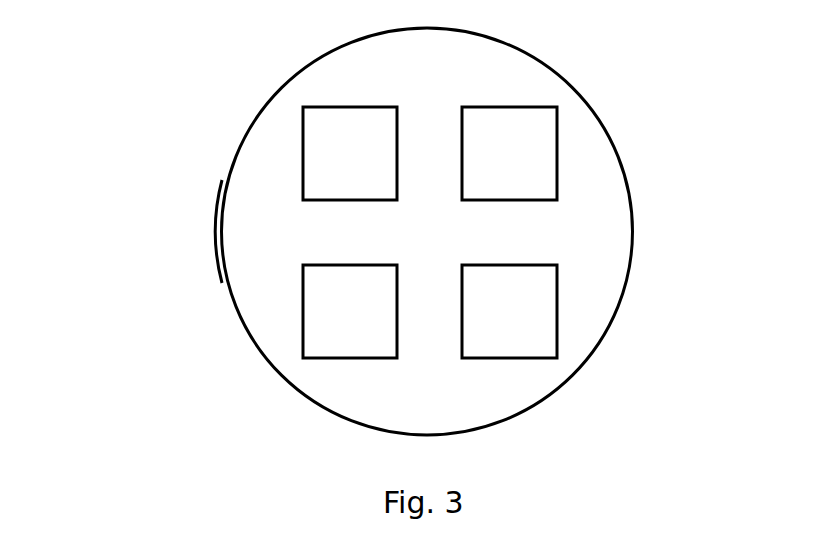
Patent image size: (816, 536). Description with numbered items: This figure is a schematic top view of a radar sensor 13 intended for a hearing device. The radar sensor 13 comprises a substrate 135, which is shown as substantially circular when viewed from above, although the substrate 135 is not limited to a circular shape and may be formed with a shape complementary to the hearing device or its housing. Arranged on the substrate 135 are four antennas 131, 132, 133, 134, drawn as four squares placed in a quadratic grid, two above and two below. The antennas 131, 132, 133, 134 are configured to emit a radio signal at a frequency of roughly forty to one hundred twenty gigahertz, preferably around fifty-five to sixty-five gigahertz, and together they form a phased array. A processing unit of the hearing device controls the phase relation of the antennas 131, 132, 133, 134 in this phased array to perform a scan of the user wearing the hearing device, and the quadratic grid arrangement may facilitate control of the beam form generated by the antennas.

The radar sensor 13 is at (137, 270).
The antenna 131 is at (303, 155).
The antenna 132 is at (303, 330).
The antenna 133 is at (557, 150).
The antenna 134 is at (557, 312).
The substrate 135 is at (222, 213).